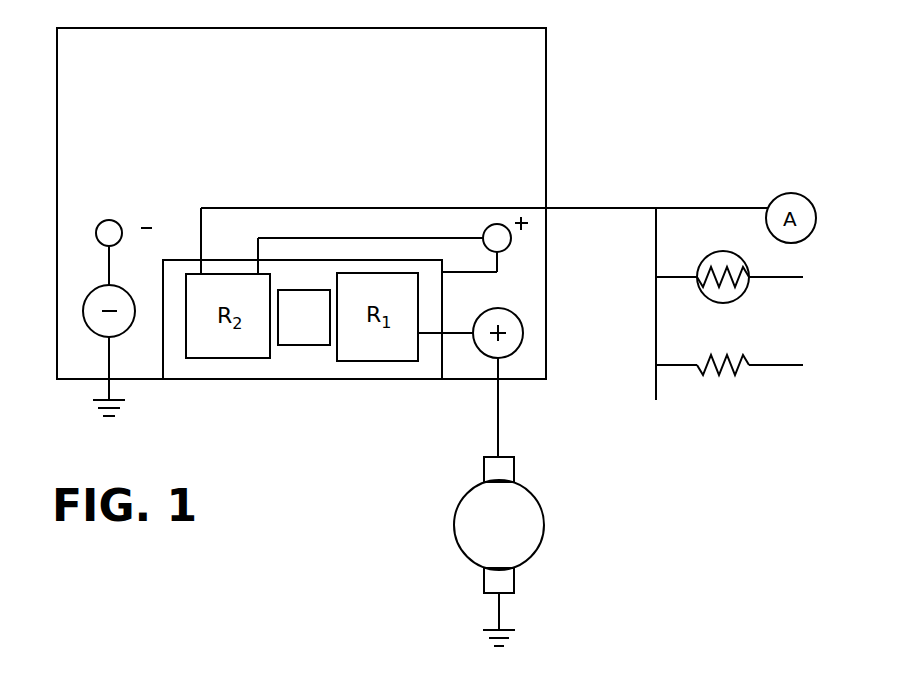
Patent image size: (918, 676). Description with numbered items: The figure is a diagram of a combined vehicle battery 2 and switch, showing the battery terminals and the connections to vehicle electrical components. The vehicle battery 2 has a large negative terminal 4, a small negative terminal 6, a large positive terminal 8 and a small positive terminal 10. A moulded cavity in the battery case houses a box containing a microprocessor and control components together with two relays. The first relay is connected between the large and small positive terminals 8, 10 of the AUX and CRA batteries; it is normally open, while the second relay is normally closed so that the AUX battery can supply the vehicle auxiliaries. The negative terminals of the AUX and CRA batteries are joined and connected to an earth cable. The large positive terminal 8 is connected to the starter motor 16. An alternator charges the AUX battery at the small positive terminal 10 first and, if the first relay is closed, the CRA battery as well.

The vehicle battery 2 is at (291, 113).
The large negative terminal 4 is at (115, 325).
The small negative terminal 6 is at (109, 220).
The large positive terminal 8 is at (522, 344).
The small positive terminal 10 is at (507, 248).
The starter motor 16 is at (539, 547).